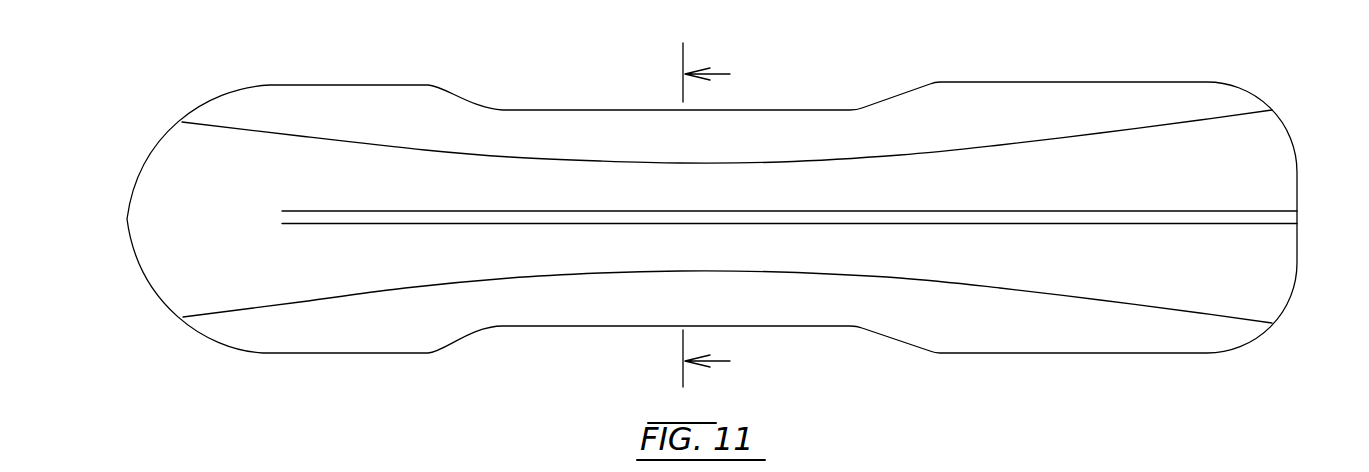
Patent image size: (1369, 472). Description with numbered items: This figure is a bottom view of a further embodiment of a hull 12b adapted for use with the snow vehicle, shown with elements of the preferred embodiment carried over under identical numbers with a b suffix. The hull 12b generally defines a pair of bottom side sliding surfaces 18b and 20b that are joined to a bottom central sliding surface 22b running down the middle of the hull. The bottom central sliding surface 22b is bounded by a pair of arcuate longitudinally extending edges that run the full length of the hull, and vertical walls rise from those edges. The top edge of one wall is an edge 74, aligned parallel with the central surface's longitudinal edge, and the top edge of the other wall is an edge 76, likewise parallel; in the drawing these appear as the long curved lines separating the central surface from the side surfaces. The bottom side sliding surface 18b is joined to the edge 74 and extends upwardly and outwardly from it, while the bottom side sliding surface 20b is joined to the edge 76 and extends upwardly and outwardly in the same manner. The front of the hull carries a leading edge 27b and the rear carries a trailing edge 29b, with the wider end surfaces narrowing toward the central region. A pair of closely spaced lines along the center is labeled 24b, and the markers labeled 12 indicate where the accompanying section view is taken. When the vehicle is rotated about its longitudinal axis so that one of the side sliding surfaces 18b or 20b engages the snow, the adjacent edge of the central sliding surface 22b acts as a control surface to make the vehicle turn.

The hull 12b is at (772, 110).
The bottom side sliding surface 18b is at (335, 97).
The bottom side sliding surface 20b is at (262, 330).
The bottom central sliding surface 22b is at (1272, 266).
The central slot 24b is at (1290, 216).
The leading edge 27b is at (178, 313).
The trailing edge 29b is at (1296, 150).
The edge 74 is at (405, 288).
The edge 76 is at (438, 152).
The section line 12 is at (688, 215).